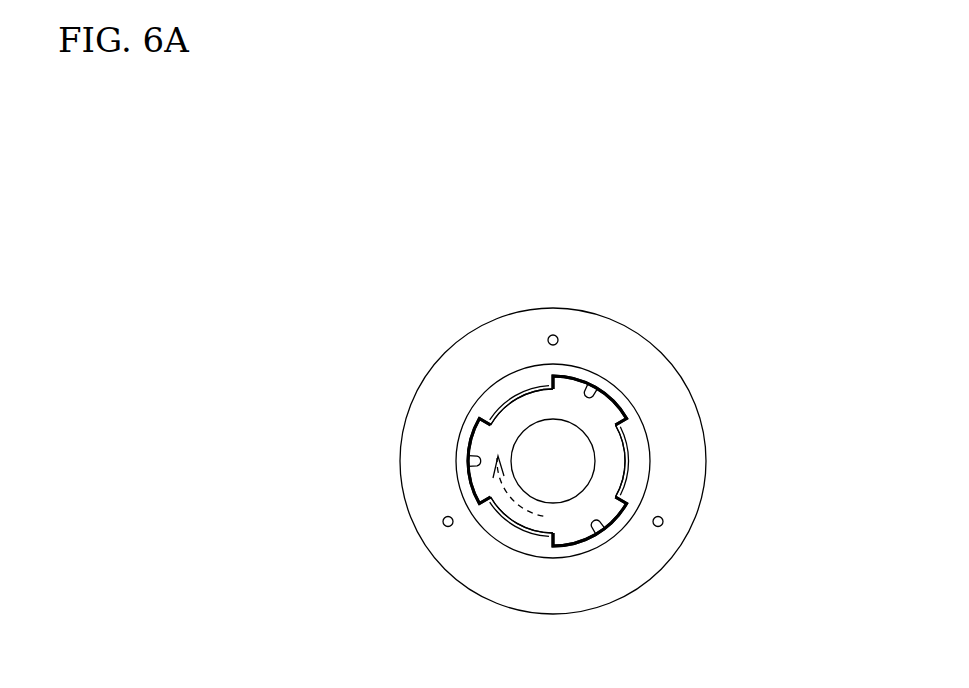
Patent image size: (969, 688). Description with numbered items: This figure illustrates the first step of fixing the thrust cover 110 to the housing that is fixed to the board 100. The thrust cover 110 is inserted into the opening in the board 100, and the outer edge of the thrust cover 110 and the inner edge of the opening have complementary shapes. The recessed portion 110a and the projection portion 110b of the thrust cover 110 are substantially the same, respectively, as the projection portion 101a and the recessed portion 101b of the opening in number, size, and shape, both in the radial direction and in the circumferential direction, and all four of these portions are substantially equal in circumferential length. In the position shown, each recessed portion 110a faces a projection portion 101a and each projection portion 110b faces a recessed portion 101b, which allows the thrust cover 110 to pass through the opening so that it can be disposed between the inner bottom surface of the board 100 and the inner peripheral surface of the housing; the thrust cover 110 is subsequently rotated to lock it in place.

The board 100 is at (750, 285).
The thrust cover 110 is at (650, 472).
The recessed portion 110a is at (538, 390).
The projection portion 110b is at (610, 412).
The projection portion 101a is at (515, 388).
The recessed portion 101b is at (600, 390).